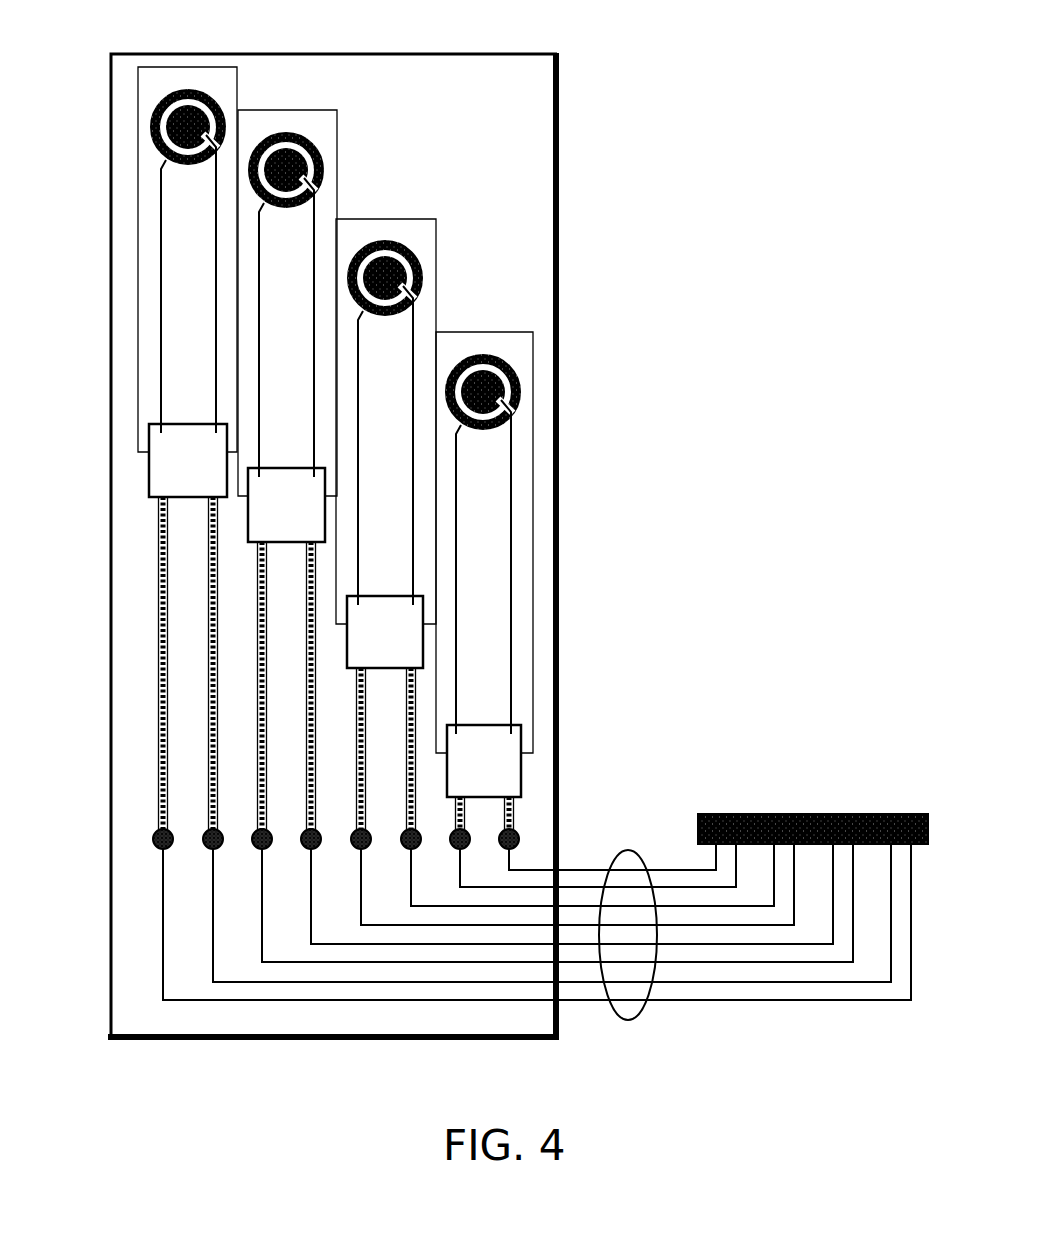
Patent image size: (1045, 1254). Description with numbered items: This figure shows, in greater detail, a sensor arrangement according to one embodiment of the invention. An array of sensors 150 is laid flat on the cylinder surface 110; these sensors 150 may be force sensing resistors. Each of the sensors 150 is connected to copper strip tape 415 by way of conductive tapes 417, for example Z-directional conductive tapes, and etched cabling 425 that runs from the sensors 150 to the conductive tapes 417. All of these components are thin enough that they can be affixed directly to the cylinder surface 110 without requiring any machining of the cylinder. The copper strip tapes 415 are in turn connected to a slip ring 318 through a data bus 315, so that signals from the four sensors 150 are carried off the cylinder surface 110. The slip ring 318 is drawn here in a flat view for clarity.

The cylinder surface 110 is at (558, 143).
The sensors 150 is at (268, 138).
The etched cabling 425 is at (216, 312).
The conductive tapes 417 is at (521, 735).
The copper strip tape 415 is at (210, 600).
The data bus 315 is at (632, 830).
The slip ring 318 is at (813, 797).